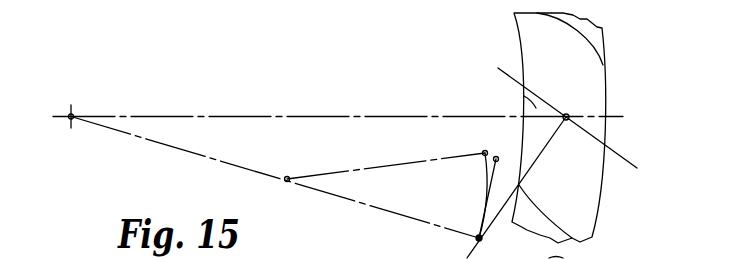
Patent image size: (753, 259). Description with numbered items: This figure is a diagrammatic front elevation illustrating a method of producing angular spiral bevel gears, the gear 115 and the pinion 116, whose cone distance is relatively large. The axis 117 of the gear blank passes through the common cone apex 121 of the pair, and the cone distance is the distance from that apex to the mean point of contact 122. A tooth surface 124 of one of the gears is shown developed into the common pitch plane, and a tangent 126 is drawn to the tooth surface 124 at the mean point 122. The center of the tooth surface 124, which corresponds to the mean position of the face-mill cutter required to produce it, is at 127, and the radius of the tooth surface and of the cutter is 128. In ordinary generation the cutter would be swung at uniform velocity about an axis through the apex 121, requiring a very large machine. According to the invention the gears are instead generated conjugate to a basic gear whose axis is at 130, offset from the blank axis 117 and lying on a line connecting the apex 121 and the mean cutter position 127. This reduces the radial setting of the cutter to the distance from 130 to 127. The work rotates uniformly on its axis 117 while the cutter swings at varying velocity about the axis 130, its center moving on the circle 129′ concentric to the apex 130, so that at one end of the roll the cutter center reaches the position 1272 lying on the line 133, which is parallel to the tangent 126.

The angular spiral bevel gear 115 is at (597, 77).
The pinion 116 is at (575, 0).
The axis of the gear 117 is at (372, 116).
The common cone apex 121 is at (67, 120).
The mean point of contact 122 is at (578, 105).
The tooth surface 124 is at (540, 104).
The tangent to the tooth surface 126 is at (620, 153).
The center of the tooth surface 127 is at (481, 239).
The cutter center position at end of generating roll 1272 is at (483, 156).
The radius of the tooth surface 128 is at (534, 163).
The circle concentric to the apex 129′ is at (485, 195).
The axis of the basic generating gear 130 is at (286, 183).
The line through point 127'' 133 is at (486, 150).